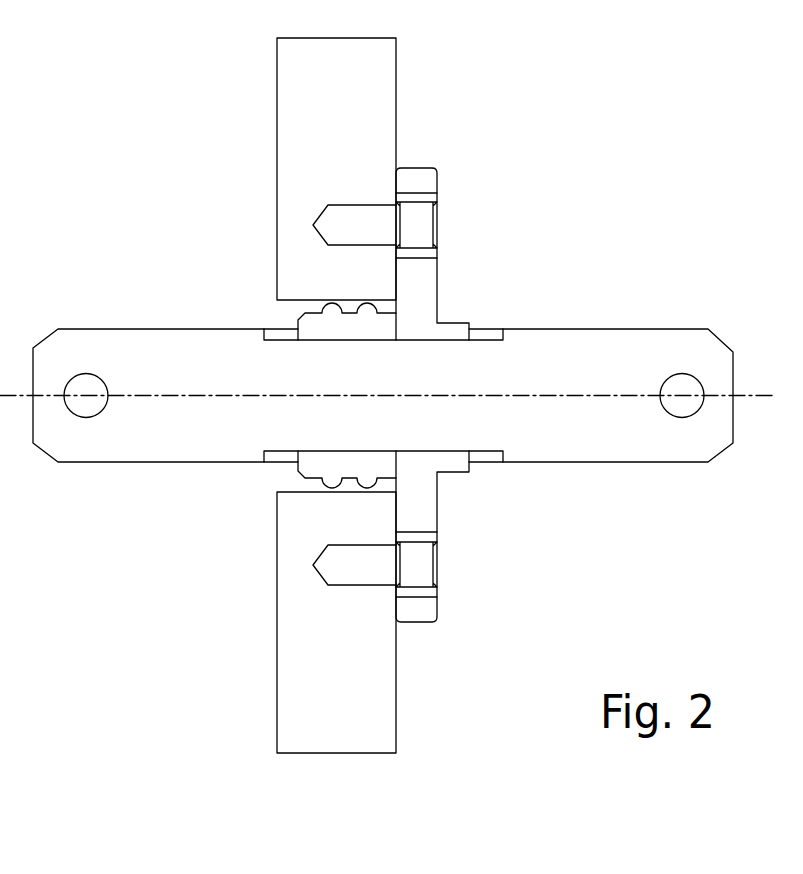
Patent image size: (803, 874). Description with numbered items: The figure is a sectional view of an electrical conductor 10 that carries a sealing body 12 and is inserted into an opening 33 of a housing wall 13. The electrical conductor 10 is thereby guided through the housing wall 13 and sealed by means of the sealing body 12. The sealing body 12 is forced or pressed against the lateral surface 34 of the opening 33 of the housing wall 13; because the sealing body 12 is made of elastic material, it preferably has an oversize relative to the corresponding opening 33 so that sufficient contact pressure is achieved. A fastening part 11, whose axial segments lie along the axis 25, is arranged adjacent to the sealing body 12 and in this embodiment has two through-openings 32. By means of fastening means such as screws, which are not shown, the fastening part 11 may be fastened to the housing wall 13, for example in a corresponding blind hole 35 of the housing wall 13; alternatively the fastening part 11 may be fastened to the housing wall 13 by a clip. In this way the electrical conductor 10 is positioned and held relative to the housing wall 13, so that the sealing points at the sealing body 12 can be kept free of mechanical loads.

The electrical conductor 10 is at (588, 442).
The fastening part 11 is at (427, 502).
The sealing body 12 is at (312, 322).
The housing wall 13 is at (380, 116).
The axis 25 is at (137, 393).
The through-openings 32 is at (420, 225).
The opening 33 is at (179, 496).
The lateral surface 34 is at (294, 303).
The blind hole 35 is at (338, 220).